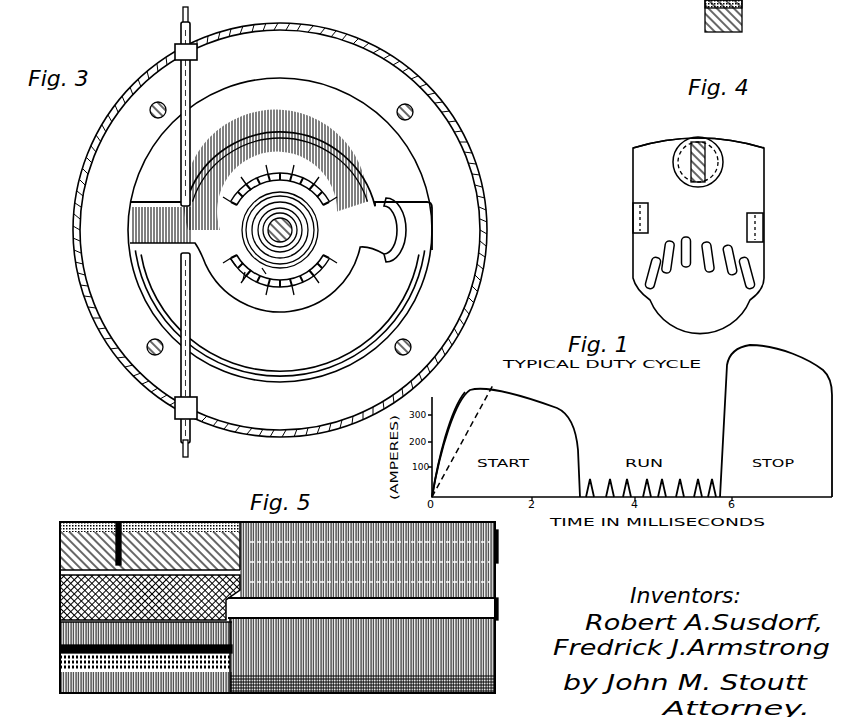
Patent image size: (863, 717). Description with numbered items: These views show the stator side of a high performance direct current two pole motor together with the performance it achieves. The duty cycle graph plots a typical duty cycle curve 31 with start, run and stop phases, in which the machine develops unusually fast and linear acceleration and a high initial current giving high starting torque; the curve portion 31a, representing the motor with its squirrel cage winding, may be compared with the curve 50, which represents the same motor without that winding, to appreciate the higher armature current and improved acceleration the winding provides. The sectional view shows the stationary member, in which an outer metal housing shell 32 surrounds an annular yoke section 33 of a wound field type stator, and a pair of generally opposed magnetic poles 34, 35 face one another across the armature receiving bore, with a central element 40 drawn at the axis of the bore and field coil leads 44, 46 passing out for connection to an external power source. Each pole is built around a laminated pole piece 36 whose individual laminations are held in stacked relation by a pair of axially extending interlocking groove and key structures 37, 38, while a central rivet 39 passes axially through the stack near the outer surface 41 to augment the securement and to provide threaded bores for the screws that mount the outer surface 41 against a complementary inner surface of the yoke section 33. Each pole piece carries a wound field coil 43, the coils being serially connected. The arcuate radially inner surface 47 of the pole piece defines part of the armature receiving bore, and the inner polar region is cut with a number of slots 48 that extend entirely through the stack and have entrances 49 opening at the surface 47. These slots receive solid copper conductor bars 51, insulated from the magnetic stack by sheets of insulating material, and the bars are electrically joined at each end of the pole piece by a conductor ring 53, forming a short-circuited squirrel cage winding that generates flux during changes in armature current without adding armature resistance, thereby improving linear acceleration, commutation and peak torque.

In FIG. 1, the duty cycle curve 31 is at (535, 402).
In FIG. 1, the curve portion 31a is at (444, 424).
In FIG. 1, the curve 50 is at (474, 392).
In FIG. 3, the outer metal housing shell 32 is at (404, 66).
In FIG. 3, the annular yoke section 33 is at (429, 118).
In FIG. 3, the magnetic pole 34 is at (318, 176).
In FIG. 3, the magnetic pole 35 is at (324, 286).
In FIG. 4, the laminated pole piece 36 is at (755, 190).
In FIG. 5, the laminated pole piece 36 is at (470, 657).
In FIG. 4, the interlocking groove and key structure 37 is at (632, 216).
In FIG. 4, the interlocking groove and key structure 38 is at (757, 228).
In FIG. 5, the interlocking groove and key structure 38 is at (478, 612).
In FIG. 4, the central rivet 39 is at (726, 140).
In FIG. 5, the central rivet 39 is at (497, 561).
In FIG. 3, the central shaft hub 40 is at (328, 235).
In FIG. 4, the outer surface 41 is at (665, 138).
In FIG. 5, the outer surface 41 is at (352, 524).
In FIG. 3, the wound field coil 43 is at (321, 84).
In FIG. 3, the lead 44 is at (193, 28).
In FIG. 3, the lead 46 is at (181, 426).
In FIG. 4, the radially inner surface 47 is at (697, 270).
In FIG. 5, the radially inner surface 47 is at (60, 640).
In FIG. 4, the slots 48 is at (708, 242).
In FIG. 4, the entrances 49 is at (738, 278).
In FIG. 5, the entrances 49 is at (60, 670).
In FIG. 3, the electrical conductor bars 51 is at (266, 274).
In FIG. 3, the conductor ring 53 is at (230, 258).